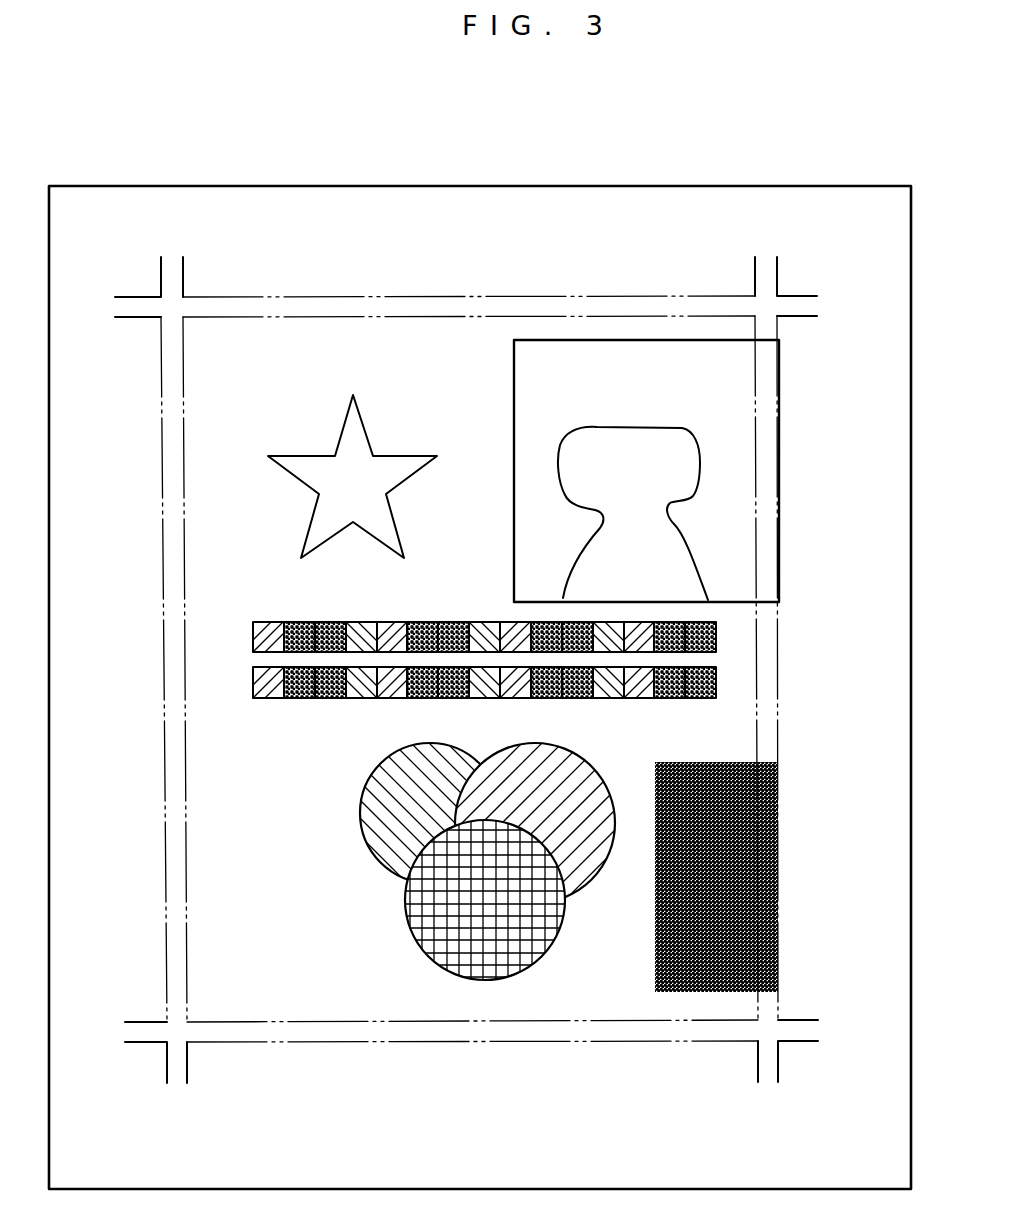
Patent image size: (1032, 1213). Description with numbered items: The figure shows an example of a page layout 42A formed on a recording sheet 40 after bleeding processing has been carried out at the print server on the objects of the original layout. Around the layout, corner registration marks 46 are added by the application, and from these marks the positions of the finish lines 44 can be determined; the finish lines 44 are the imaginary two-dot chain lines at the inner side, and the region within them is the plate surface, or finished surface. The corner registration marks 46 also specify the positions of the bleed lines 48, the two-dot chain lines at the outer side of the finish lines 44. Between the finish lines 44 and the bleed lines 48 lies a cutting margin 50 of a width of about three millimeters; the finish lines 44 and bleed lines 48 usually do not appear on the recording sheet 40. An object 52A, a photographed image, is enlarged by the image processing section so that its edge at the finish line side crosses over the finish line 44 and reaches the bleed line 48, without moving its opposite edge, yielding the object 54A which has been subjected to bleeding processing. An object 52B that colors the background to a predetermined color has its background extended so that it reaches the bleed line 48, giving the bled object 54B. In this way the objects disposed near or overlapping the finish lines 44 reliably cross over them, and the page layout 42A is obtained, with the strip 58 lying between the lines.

The recording sheet 40 is at (474, 185).
The page layout 42A is at (455, 345).
The finish lines 44 is at (186, 690).
The corner registration marks 46 is at (140, 285).
The bleed lines 48 is at (288, 297).
The cutting margin 50 is at (350, 305).
The object 52A is at (727, 405).
The object 52B is at (745, 900).
The object 54A is at (693, 471).
The object 54B is at (771, 877).
The margin strip 58 is at (180, 748).